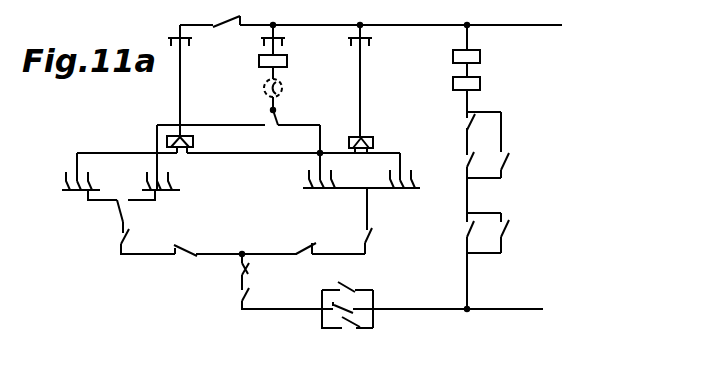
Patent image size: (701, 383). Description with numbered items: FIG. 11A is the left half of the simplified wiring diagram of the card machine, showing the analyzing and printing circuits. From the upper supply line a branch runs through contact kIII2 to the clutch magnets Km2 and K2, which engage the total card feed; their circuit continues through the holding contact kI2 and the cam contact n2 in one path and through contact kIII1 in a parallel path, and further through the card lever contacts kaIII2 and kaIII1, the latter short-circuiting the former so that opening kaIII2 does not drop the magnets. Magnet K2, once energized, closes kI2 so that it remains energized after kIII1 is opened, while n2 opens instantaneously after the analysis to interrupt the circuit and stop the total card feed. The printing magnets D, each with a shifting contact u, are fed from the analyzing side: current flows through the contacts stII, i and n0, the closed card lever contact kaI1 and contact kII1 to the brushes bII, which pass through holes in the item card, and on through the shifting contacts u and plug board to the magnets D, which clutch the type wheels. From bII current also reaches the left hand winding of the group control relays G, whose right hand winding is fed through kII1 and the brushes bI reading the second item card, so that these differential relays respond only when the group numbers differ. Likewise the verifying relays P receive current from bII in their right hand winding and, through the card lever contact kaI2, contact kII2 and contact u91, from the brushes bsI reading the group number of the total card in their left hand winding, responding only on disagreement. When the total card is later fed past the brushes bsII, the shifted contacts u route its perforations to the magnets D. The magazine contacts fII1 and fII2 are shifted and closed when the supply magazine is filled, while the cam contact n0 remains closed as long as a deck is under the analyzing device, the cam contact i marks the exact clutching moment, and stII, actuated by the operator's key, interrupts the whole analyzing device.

The contact k²_III kIII2 is at (238, 18).
The printing magnets D is at (301, 59).
The shifting contacts u is at (298, 114).
The clutch magnet Km² Km2 is at (487, 56).
The clutch magnet K² K2 is at (480, 83).
The verifying relays P is at (203, 141).
The group control relays G is at (384, 141).
The first set of brushes for total cards bsI is at (60, 177).
The second set of brushes for total cards bsII is at (186, 177).
The second set of brushes for item cards bII is at (321, 177).
The first set of brushes for item cards bI is at (411, 177).
The contact k²_I kI2 is at (458, 130).
The cam contact n² n2 is at (480, 160).
The contact k¹_III kIII1 is at (516, 159).
The contact u⁹¹ u91 is at (134, 211).
The contact k²_II kII2 is at (134, 239).
The card lever contact ka²_I kaI2 is at (192, 243).
The card lever contact ka¹_I kaI1 is at (311, 239).
The contact k¹_II kII1 is at (378, 221).
The card lever contact ka²_III kaIII2 is at (450, 234).
The card lever contact ka¹_III kaIII1 is at (522, 234).
The cam contact n₀ n0 is at (255, 273).
The cam contact i is at (249, 296).
The contact f¹_II fII1 is at (347, 285).
The contact st_II stII is at (342, 307).
The contact f²_II fII2 is at (347, 331).